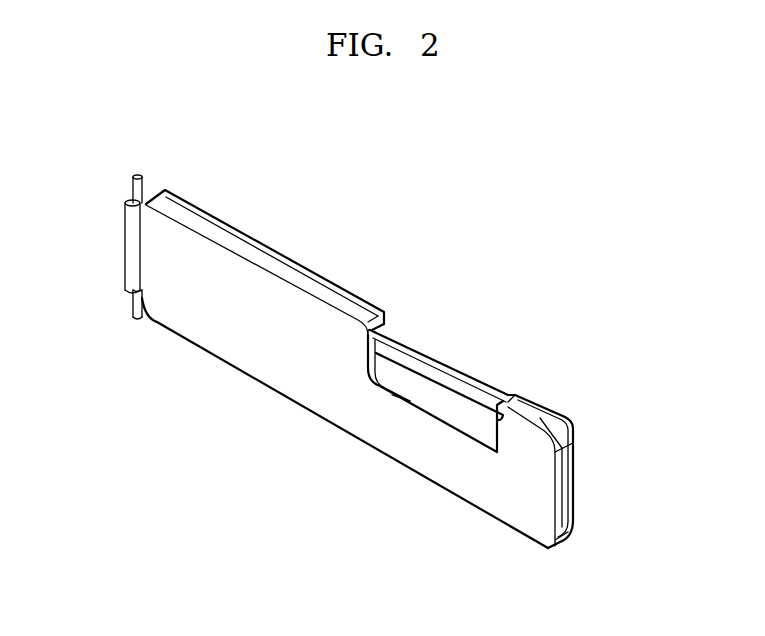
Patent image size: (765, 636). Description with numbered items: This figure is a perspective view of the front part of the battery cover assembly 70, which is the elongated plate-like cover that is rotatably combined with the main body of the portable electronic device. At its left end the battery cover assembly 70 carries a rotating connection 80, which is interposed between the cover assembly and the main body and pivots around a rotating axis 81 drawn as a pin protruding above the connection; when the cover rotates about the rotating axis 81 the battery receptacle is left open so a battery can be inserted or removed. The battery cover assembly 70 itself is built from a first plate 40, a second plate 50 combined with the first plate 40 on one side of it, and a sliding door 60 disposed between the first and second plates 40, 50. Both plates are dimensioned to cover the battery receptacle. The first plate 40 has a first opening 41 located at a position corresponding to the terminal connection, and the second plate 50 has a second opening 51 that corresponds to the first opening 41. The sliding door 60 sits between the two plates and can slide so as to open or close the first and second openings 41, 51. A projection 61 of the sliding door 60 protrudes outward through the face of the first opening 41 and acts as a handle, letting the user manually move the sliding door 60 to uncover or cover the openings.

The battery cover assembly 70 is at (599, 208).
The rotating connection 80 is at (113, 292).
The rotating axis 81 is at (139, 175).
The second opening 51 is at (385, 318).
The sliding door 60 is at (450, 337).
The projection 61 is at (460, 392).
The first opening 41 is at (392, 396).
The first plate 40 is at (537, 407).
The second plate 50 is at (566, 405).